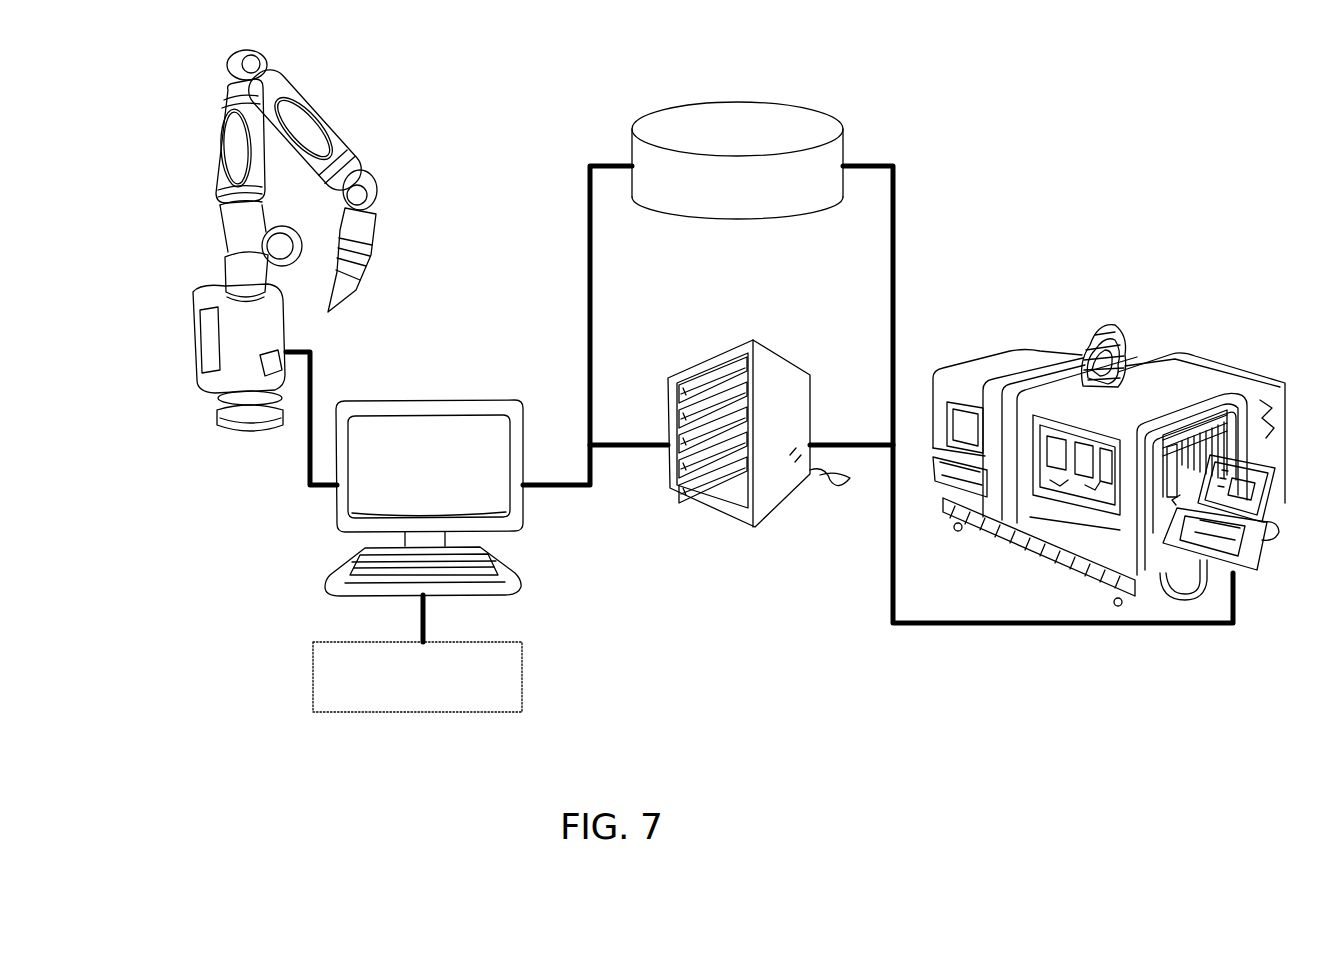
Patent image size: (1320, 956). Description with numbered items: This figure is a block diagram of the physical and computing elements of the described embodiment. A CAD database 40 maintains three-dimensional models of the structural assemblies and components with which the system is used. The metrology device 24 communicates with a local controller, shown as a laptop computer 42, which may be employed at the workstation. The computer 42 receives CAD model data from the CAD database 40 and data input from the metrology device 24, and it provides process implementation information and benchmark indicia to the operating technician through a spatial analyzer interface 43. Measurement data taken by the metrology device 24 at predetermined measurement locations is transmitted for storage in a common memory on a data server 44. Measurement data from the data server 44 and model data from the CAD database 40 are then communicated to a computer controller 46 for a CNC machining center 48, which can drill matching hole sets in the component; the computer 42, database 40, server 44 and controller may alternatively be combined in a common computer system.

The metrology device 24 is at (213, 119).
The CAD database 40 is at (843, 132).
The laptop computer 42 is at (527, 415).
The spatial analyzer interface 43 is at (522, 661).
The data server 44 is at (810, 387).
The computer controller 46 is at (1143, 382).
The CNC machining center 48 is at (1236, 477).